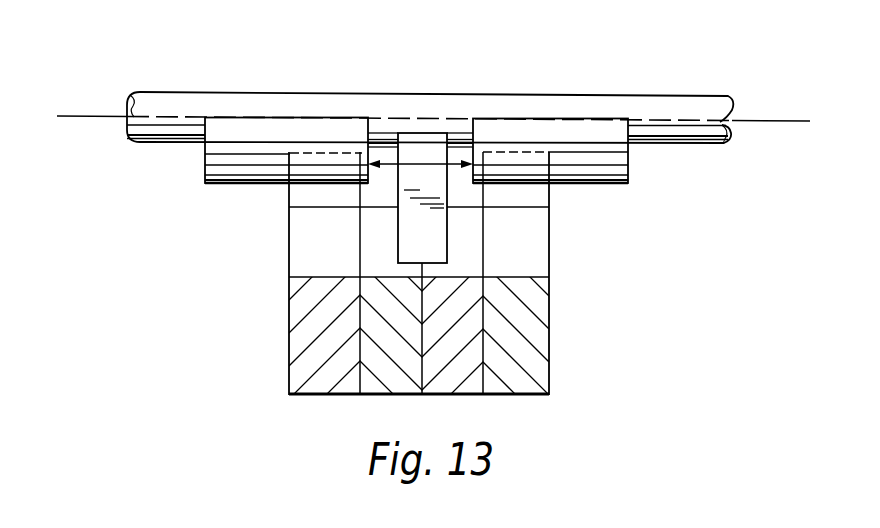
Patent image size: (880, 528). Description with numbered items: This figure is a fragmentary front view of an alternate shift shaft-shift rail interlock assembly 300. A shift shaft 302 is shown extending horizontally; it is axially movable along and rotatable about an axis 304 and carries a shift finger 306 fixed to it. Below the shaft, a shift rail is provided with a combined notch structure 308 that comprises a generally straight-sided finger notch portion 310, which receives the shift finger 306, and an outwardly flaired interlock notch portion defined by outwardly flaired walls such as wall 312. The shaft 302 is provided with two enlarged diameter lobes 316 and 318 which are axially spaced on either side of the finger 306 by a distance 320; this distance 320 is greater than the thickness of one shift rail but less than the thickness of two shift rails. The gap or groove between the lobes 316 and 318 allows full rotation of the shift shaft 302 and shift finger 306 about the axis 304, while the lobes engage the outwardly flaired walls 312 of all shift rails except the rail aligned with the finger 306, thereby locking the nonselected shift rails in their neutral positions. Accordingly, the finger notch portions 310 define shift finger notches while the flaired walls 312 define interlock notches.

The shift shaft-shift rail interlock assembly 300 is at (596, 289).
The shift shaft 302 is at (250, 105).
The axis 304 is at (73, 113).
The shift finger 306 is at (410, 226).
The combined notch structure 308 is at (312, 232).
The finger notch portion 310 is at (310, 213).
The outwardly flaired wall 312 is at (310, 190).
The enlarged diameter lobe 316 is at (628, 173).
The enlarged diameter lobe 318 is at (220, 154).
The distance 320 is at (417, 163).